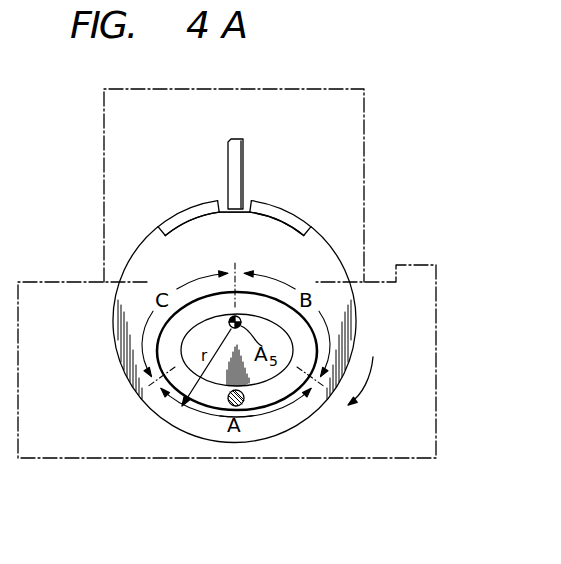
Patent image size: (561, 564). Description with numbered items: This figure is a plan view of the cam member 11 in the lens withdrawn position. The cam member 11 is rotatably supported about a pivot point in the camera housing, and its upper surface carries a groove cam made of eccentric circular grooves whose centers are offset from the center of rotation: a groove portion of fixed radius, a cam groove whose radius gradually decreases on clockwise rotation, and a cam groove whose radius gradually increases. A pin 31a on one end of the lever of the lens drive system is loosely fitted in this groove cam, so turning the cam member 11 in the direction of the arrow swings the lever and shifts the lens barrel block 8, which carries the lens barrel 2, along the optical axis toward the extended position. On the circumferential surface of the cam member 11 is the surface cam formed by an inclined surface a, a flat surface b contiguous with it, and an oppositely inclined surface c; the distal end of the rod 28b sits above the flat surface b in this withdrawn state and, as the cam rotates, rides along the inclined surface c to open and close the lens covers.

The lens barrel 2 is at (364, 110).
The lens barrel block 8 is at (436, 372).
The cam member 11 is at (112, 311).
The rod 28b is at (242, 156).
The pin 31a is at (229, 403).
The inclined surface a is at (187, 211).
The flat surface b is at (248, 198).
The inclined surface c is at (295, 218).